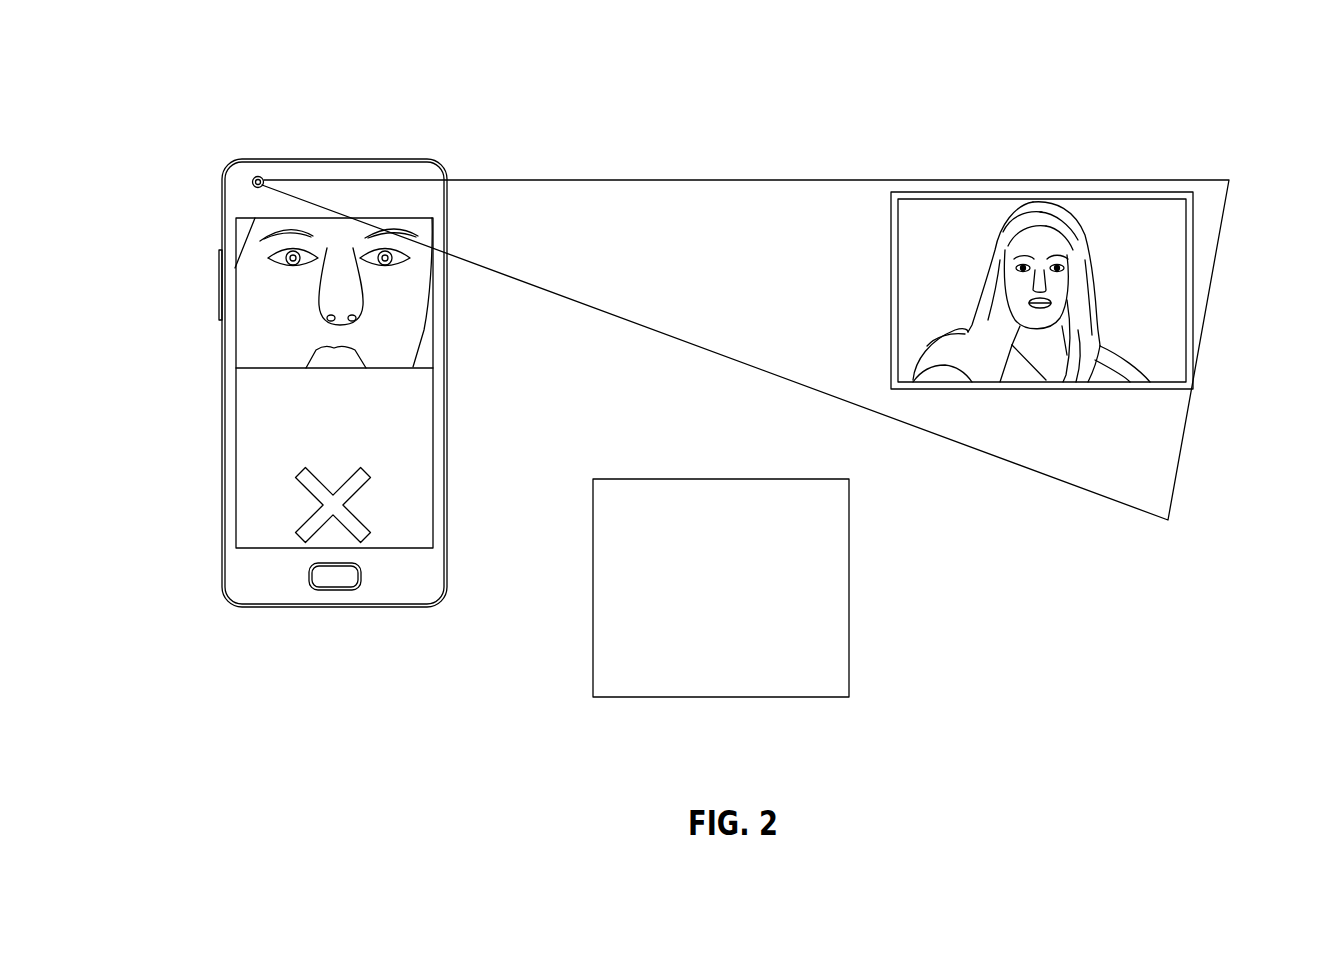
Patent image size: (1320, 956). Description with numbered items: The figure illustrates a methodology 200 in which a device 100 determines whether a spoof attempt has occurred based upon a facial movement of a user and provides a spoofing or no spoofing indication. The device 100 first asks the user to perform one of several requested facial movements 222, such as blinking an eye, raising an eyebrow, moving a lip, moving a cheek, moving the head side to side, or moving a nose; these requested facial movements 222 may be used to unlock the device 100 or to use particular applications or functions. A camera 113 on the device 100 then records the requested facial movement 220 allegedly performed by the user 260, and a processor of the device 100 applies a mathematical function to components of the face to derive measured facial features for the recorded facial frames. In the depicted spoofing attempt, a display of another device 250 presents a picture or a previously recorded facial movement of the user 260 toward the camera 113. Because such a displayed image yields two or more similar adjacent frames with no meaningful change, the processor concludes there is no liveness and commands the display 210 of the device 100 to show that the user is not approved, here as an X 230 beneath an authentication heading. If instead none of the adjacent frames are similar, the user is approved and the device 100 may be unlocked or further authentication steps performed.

The device 100 is at (412, 160).
The camera 113 is at (256, 178).
The methodology 200 is at (232, 108).
The display 210 is at (250, 497).
The recorded facial movement 220 is at (428, 354).
The requested facial movements 222 is at (757, 479).
The X 230 is at (352, 519).
The display of another device 250 is at (931, 192).
The user 260 is at (945, 258).